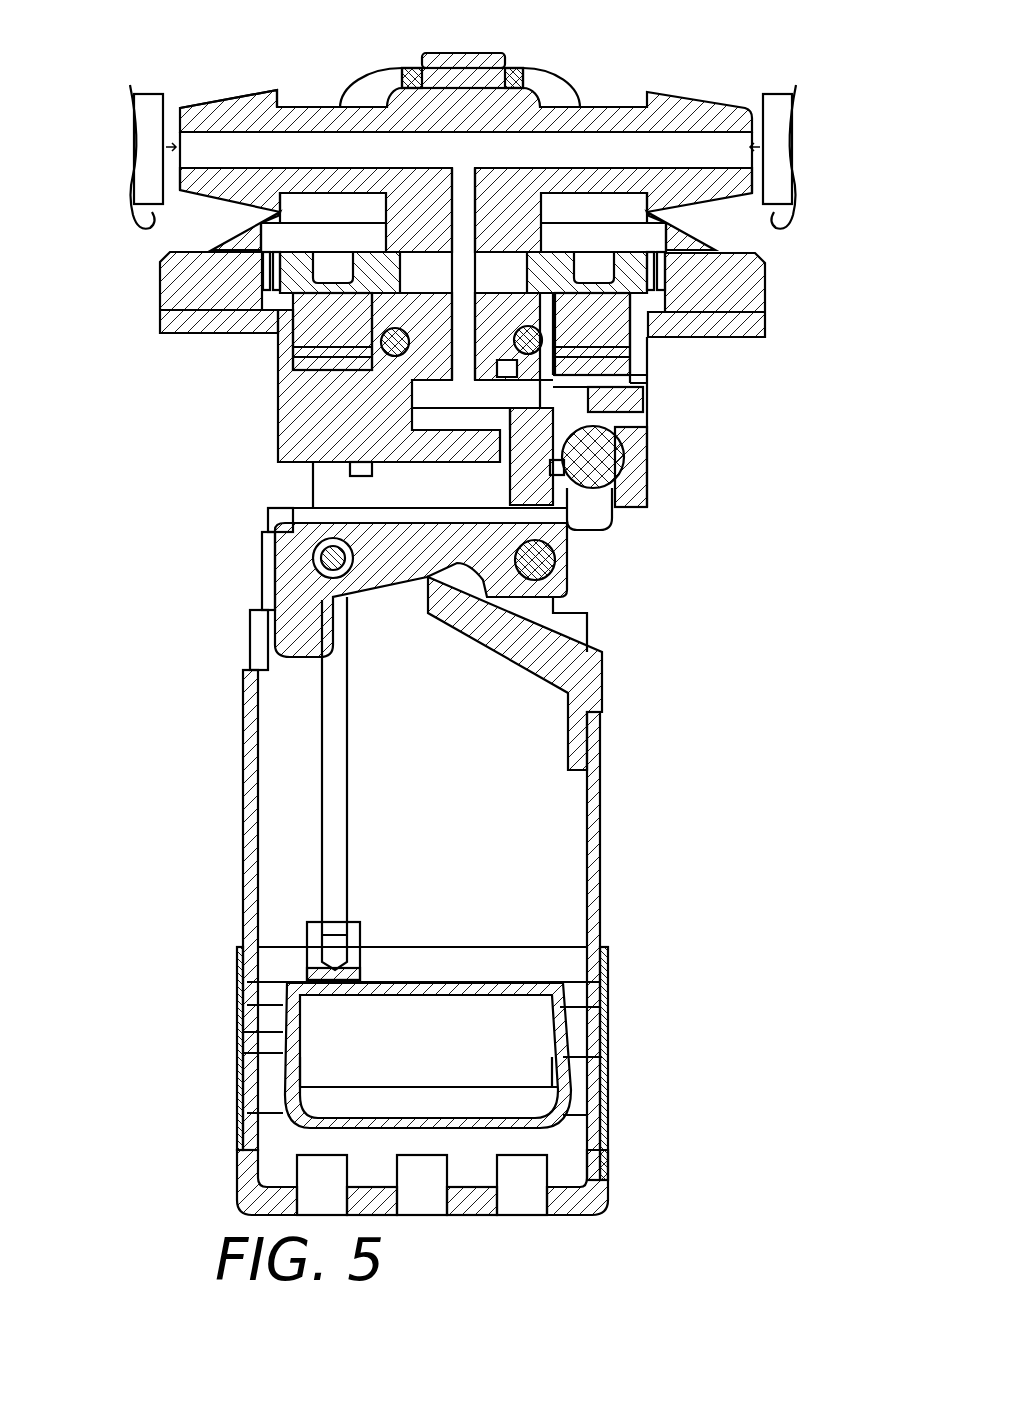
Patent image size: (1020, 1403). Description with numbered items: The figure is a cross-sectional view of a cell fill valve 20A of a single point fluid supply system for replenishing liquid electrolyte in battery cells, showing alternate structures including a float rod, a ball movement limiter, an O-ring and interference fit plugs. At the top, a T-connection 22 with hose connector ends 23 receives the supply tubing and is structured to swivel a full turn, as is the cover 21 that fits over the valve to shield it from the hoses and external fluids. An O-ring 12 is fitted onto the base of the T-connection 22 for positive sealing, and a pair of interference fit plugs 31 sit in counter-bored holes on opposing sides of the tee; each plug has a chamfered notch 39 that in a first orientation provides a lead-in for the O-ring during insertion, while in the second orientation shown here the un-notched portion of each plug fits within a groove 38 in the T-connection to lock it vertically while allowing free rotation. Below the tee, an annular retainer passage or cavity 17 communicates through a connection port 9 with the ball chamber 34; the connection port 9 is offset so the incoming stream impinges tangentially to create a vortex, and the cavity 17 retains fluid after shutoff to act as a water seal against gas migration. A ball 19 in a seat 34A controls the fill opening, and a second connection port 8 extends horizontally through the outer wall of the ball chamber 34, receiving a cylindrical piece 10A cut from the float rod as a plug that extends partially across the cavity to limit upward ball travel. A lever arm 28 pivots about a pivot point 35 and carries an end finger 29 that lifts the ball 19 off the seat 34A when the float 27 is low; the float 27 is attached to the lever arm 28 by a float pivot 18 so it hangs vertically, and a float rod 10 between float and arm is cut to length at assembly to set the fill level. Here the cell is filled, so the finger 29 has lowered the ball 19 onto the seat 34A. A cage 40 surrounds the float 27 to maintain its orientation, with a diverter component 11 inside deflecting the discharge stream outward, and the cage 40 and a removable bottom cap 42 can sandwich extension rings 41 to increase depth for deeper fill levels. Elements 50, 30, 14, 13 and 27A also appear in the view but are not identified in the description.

The cell fill valve 20A is at (404, 195).
The T-connection 22 is at (322, 107).
The hose connector ends 23 is at (272, 92).
The cover 21 is at (527, 82).
The retaining member 50 is at (141, 233).
The interference fit plugs 31 is at (300, 250).
The groove 38 is at (540, 290).
The chamfered notch 39 is at (293, 256).
The collar 30 is at (498, 324).
The collar flange 14 is at (735, 338).
The O-ring 12 is at (377, 328).
The connection port 9 is at (548, 390).
The annular retainer passage 17 is at (433, 420).
The ball chamber 34 is at (598, 373).
The cylindrical piece 10A is at (640, 400).
The connection port 8 is at (638, 417).
The ball 19 is at (593, 433).
The seat 34A is at (570, 487).
The lever arm 28 is at (350, 500).
The plate 13 is at (327, 553).
The float pivot 18 is at (317, 557).
The end finger 29 is at (588, 512).
The pivot point 35 is at (545, 563).
The diverter component 11 is at (577, 662).
The float rod 10 is at (323, 847).
The cage 40 is at (602, 840).
The extension rings 41 is at (603, 1023).
The float 27 is at (297, 1032).
The cup shelf 27A is at (300, 1128).
The bottom cap 42 is at (605, 1212).